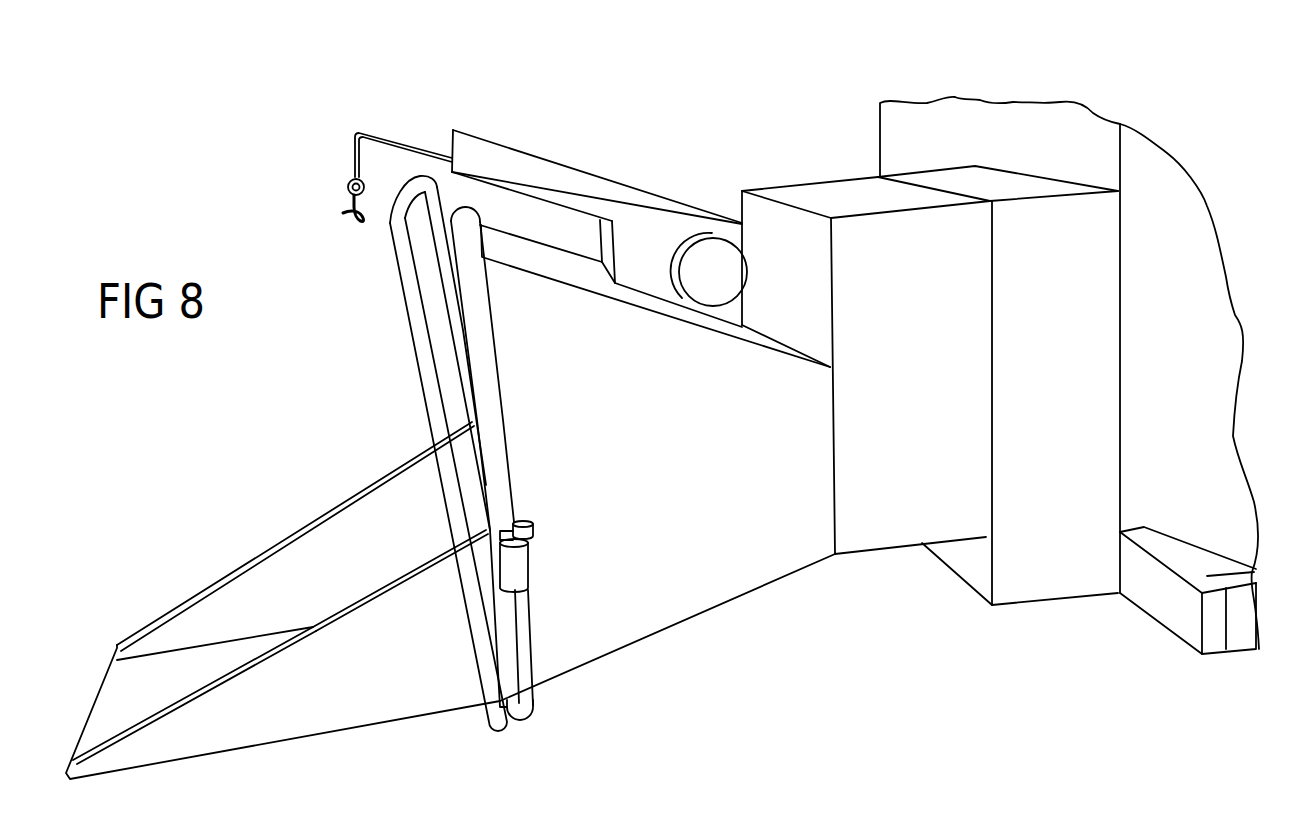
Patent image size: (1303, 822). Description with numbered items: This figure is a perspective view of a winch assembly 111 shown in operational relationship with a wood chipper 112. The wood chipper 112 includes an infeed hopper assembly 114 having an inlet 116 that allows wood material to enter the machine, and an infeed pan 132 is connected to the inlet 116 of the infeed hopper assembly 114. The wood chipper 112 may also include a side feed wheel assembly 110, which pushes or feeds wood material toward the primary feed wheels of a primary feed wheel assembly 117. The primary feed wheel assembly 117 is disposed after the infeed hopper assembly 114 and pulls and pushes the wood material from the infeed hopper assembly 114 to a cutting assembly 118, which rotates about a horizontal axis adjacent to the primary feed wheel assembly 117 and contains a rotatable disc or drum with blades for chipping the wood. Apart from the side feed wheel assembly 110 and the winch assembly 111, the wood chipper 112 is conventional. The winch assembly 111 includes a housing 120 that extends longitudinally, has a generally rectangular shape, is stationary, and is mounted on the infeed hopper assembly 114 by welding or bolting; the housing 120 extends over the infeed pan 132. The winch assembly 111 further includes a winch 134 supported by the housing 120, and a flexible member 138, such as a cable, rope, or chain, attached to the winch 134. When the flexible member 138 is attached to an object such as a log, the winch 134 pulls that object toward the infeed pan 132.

The side feed wheel assembly 110 is at (902, 546).
The winch assembly 111 is at (726, 175).
The wood chipper 112 is at (1017, 100).
The infeed hopper assembly 114 is at (713, 606).
The inlet 116 is at (478, 459).
The primary feed wheel assembly 117 is at (1055, 577).
The cutting assembly 118 is at (1198, 274).
The housing 120 is at (502, 140).
The infeed pan 132 is at (335, 712).
The winch 134 is at (673, 247).
The flexible member 138 is at (353, 155).